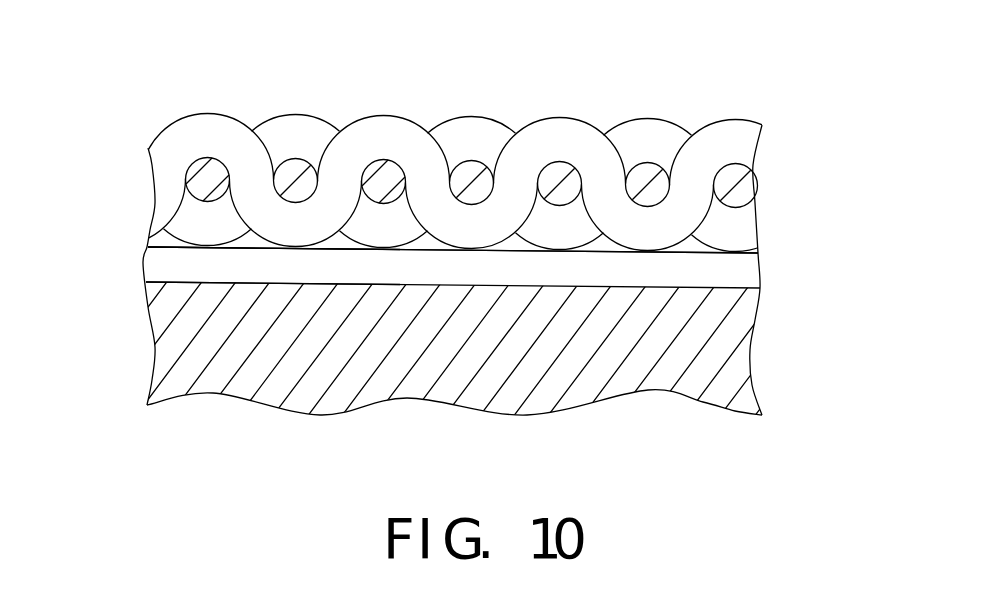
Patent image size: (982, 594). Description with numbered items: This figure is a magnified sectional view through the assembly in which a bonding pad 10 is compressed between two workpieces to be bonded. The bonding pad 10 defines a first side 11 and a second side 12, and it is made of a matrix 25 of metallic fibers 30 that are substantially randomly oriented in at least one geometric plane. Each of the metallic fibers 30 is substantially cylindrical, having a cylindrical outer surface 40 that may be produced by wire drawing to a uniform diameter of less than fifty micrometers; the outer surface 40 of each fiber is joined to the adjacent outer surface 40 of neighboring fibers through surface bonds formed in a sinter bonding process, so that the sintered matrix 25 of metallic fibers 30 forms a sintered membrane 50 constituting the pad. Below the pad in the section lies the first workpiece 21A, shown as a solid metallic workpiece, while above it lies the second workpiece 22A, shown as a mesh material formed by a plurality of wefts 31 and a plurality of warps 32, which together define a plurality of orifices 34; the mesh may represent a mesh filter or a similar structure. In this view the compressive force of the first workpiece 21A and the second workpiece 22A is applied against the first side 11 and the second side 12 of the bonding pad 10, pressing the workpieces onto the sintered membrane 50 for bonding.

The bonding pad 10 is at (454, 263).
The first side 11 is at (735, 290).
The second side 12 is at (737, 250).
The first workpiece 21A is at (618, 352).
The second workpiece 22A is at (468, 163).
The matrix 25 is at (177, 257).
The metallic fibers 30 is at (157, 262).
The wefts 31 is at (193, 127).
The warps 32 is at (298, 179).
The orifices 34 is at (605, 133).
The cylindrical outer surface 40 is at (742, 270).
The sintered membrane 50 is at (175, 273).